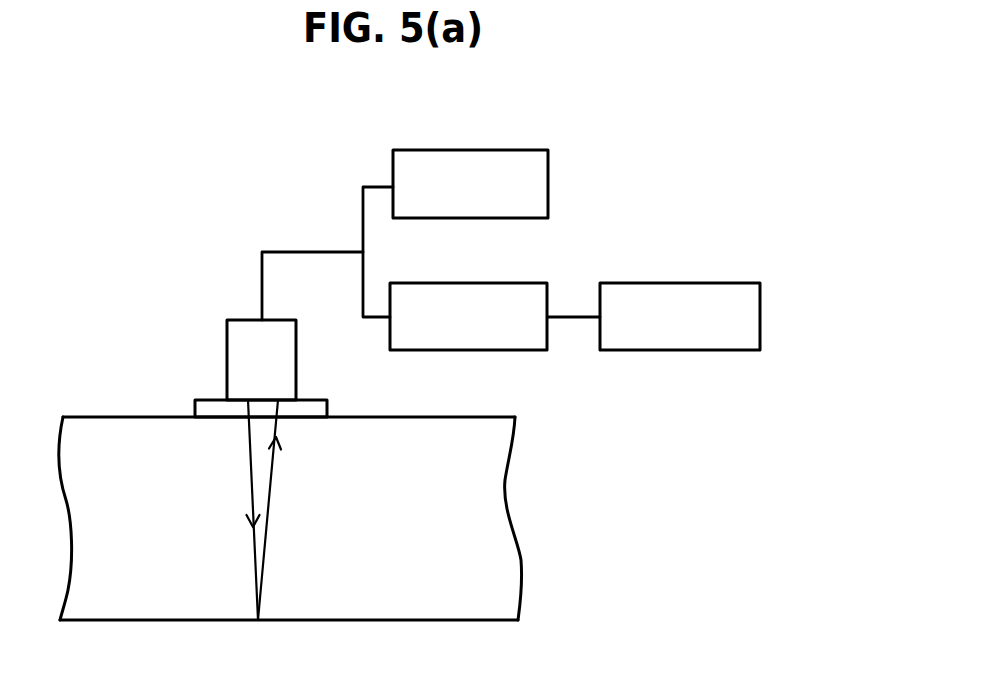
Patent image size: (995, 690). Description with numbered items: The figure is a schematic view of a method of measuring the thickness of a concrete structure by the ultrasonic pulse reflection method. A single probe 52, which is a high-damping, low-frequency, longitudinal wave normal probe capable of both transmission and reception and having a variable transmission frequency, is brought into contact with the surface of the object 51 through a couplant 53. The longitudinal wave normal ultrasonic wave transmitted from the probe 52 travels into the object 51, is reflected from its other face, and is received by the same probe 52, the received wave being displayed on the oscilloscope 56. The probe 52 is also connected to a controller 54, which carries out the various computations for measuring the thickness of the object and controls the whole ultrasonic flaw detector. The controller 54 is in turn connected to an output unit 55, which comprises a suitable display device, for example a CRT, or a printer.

The object of measurement 51 is at (512, 555).
The probe 52 is at (235, 318).
The couplant 53 is at (327, 410).
The controller 54 is at (510, 283).
The output unit 55 is at (705, 283).
The oscilloscope 56 is at (520, 150).